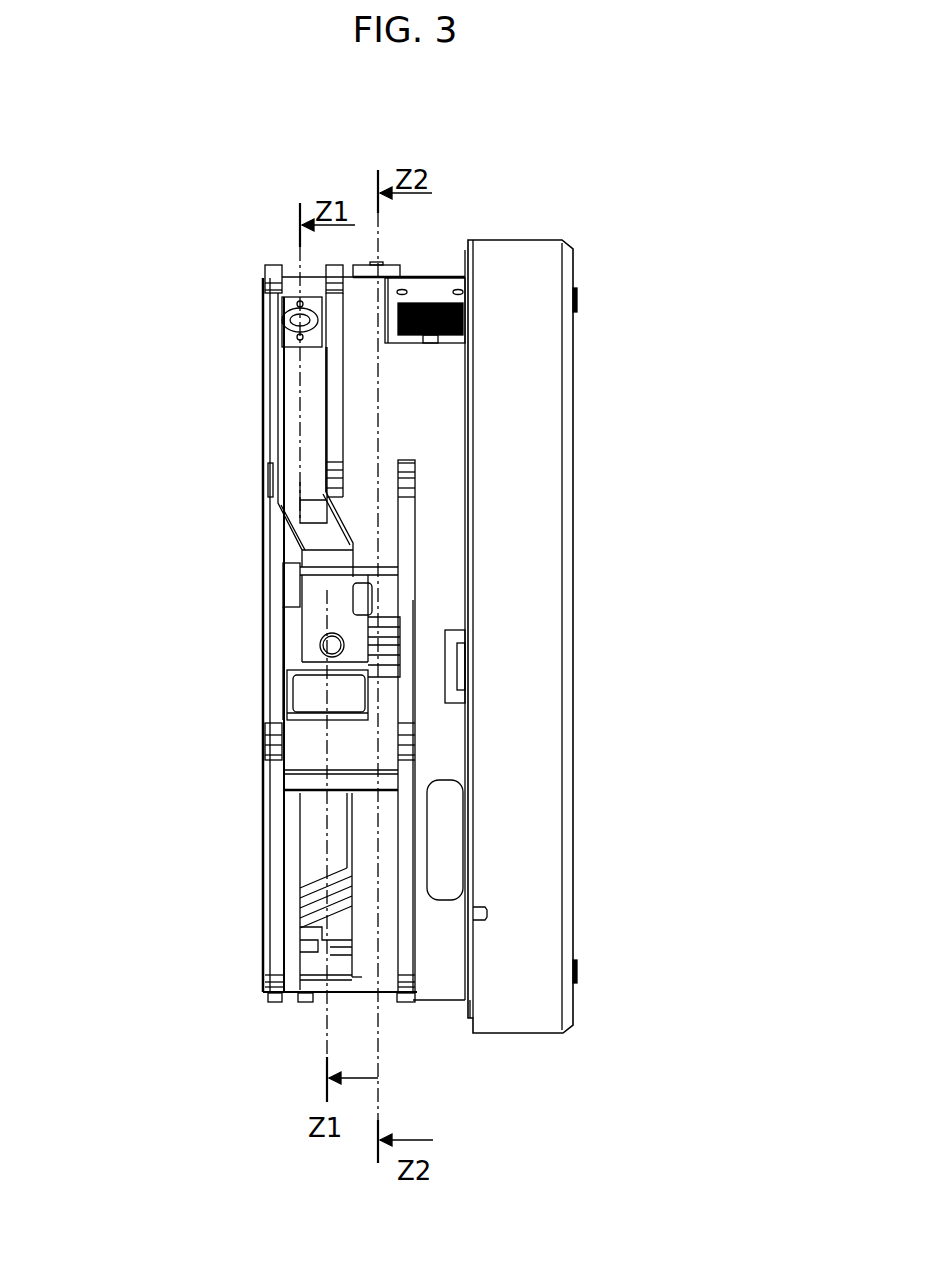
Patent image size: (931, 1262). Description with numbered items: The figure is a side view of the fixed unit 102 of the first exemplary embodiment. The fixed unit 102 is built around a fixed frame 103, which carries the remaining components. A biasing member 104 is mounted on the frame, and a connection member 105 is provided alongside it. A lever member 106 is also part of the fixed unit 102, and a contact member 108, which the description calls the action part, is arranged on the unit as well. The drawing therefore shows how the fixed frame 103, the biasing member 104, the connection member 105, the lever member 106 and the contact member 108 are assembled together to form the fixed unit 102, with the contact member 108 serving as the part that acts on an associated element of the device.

The fixed unit 102 is at (523, 348).
The fixed frame 103 is at (262, 918).
The biasing member 104 is at (293, 453).
The connection member 105 is at (300, 318).
The lever member 106 is at (313, 603).
The contact member 108 is at (373, 597).